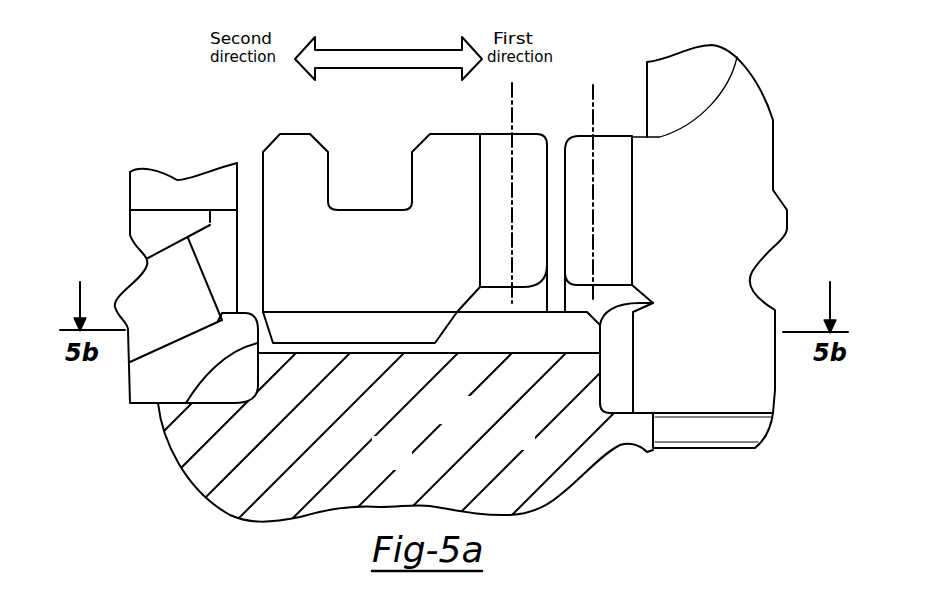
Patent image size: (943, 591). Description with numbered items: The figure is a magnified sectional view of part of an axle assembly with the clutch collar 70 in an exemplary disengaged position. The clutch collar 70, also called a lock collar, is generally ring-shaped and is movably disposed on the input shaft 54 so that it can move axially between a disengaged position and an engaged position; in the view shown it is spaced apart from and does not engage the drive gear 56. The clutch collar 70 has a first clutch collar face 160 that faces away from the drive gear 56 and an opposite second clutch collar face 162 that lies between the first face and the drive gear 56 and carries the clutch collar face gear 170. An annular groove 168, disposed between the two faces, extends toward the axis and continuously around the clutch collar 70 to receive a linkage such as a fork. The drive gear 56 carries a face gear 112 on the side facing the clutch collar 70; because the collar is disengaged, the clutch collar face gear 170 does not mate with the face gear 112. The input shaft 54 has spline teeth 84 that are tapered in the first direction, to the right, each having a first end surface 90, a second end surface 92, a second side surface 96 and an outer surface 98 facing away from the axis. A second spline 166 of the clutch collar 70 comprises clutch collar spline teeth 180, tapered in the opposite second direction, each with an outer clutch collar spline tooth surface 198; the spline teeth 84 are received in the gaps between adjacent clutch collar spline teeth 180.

The input shaft 54 is at (402, 465).
The drive gear 56 is at (745, 125).
The clutch collar 70 is at (375, 262).
The spline teeth 84 is at (653, 304).
The first end surface 90 is at (186, 403).
The second end surface 92 is at (606, 336).
The second side surface 96 is at (521, 330).
The outer surface 98 is at (560, 304).
The face gear 112 is at (610, 134).
The first clutch collar face 160 is at (263, 202).
The second clutch collar face 162 is at (480, 177).
The second spline 166 is at (282, 468).
The annular groove 168 is at (328, 174).
The clutch collar face gear 170 is at (517, 136).
The clutch collar spline teeth 180 is at (275, 358).
The outer clutch collar spline tooth surface 198 is at (395, 346).